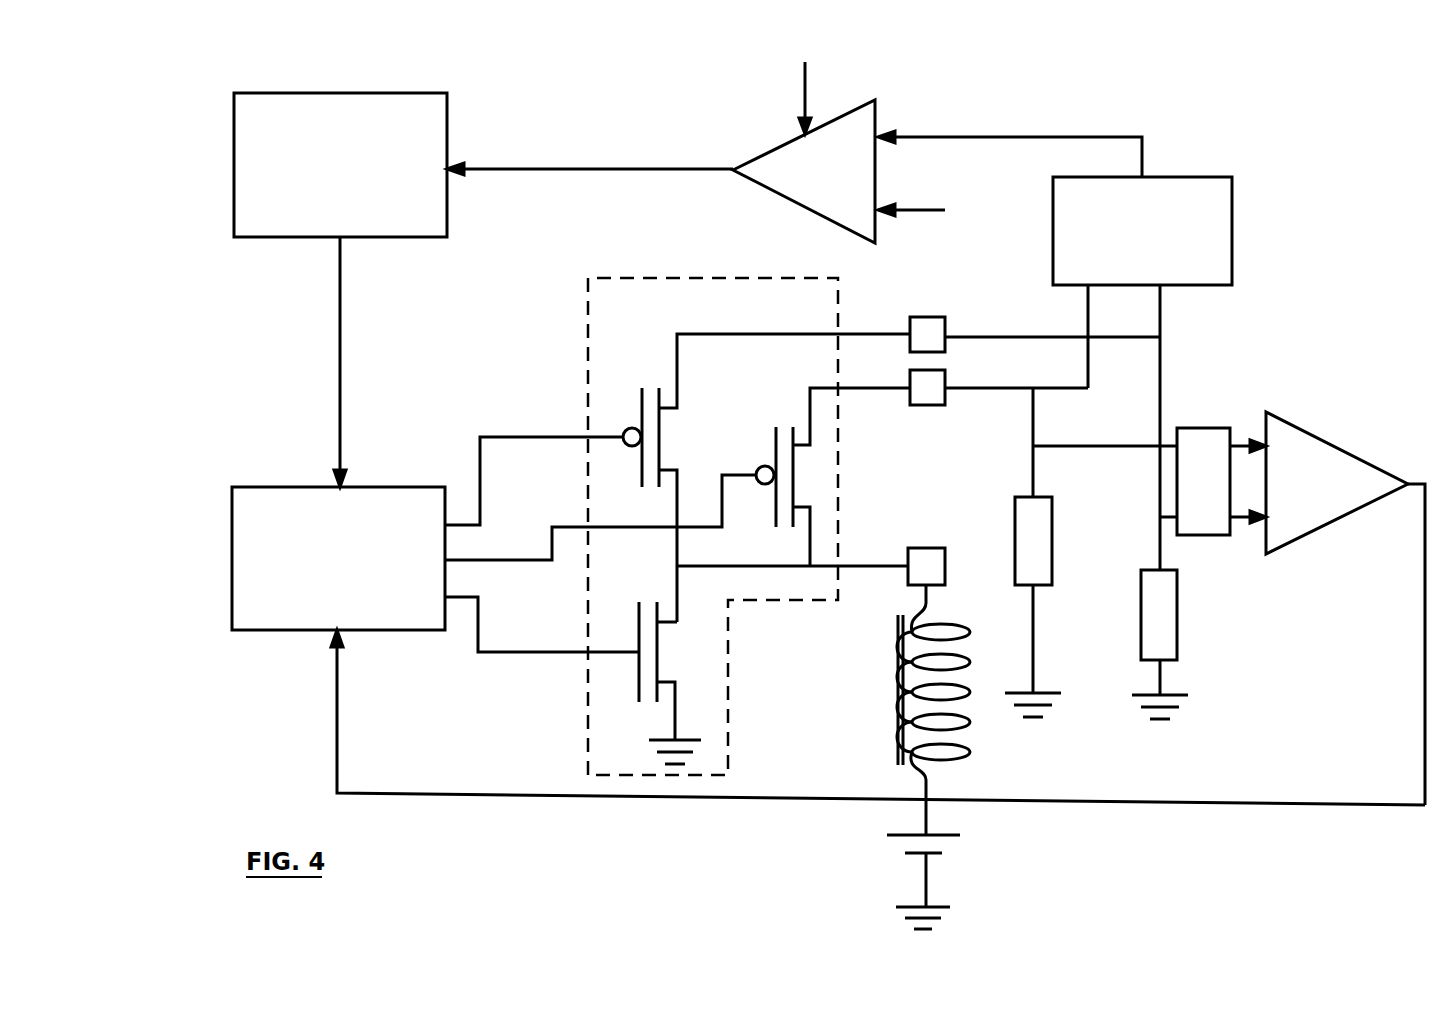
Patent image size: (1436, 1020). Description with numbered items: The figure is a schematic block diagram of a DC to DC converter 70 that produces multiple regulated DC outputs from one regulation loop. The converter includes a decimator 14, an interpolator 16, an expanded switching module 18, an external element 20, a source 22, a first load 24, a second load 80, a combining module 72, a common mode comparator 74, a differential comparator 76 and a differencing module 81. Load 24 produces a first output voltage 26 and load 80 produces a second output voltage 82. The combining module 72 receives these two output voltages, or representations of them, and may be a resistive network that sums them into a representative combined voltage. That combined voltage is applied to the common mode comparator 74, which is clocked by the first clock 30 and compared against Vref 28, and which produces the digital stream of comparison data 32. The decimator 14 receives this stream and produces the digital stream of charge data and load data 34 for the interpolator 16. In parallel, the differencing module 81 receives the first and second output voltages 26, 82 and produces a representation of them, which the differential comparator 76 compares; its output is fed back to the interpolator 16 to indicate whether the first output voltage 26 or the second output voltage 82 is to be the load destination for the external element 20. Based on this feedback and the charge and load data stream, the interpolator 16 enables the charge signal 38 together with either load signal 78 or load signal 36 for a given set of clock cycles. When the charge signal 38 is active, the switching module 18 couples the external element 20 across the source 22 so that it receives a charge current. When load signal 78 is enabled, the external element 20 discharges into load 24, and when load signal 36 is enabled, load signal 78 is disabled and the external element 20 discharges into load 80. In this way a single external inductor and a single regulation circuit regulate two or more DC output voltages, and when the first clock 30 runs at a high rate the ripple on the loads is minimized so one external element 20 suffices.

The decimator 14 is at (340, 165).
The interpolator 16 is at (338, 558).
The expanded switching module 18 is at (766, 526).
The external element 20 is at (865, 692).
The source 22 is at (863, 864).
The first load 24 is at (1062, 607).
The first output voltage 26 is at (1014, 399).
The Vref 28 is at (954, 211).
The first clock 30 is at (805, 85).
The digital stream of comparison data 32 is at (590, 140).
The digital stream of charge data and load data 34 is at (248, 362).
The load signal 36 is at (529, 449).
The charge signal 38 is at (535, 654).
The DC to DC converter 70 is at (508, 860).
The combining module 72 is at (1055, 350).
The common mode comparator 74 is at (752, 176).
The differential comparator 76 is at (1326, 581).
The load signal 78 is at (600, 511).
The second load 80 is at (1189, 644).
The differencing module 81 is at (1193, 550).
The second output voltage 82 is at (1176, 337).